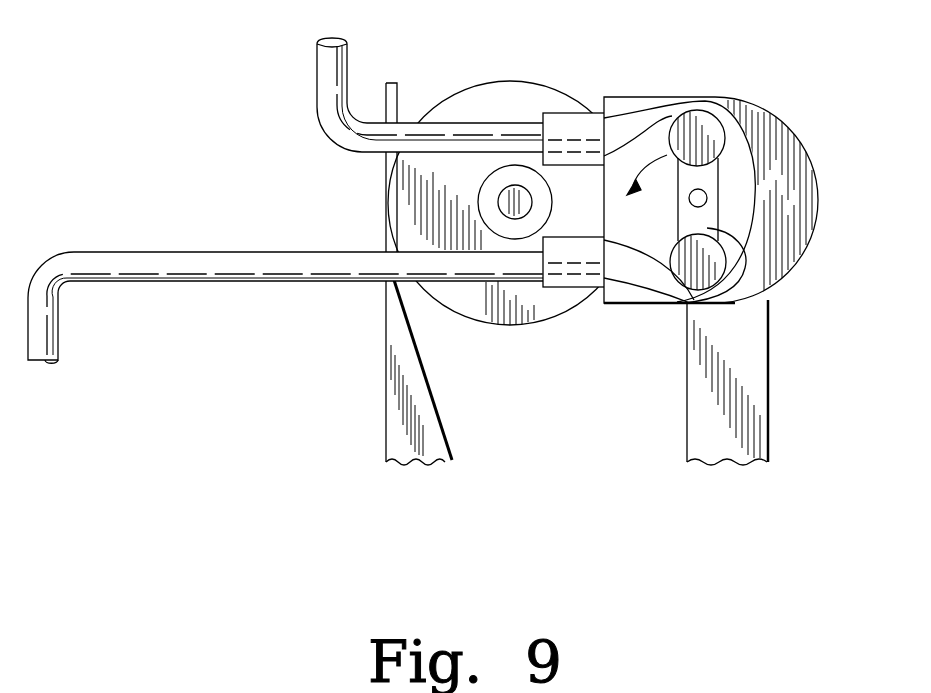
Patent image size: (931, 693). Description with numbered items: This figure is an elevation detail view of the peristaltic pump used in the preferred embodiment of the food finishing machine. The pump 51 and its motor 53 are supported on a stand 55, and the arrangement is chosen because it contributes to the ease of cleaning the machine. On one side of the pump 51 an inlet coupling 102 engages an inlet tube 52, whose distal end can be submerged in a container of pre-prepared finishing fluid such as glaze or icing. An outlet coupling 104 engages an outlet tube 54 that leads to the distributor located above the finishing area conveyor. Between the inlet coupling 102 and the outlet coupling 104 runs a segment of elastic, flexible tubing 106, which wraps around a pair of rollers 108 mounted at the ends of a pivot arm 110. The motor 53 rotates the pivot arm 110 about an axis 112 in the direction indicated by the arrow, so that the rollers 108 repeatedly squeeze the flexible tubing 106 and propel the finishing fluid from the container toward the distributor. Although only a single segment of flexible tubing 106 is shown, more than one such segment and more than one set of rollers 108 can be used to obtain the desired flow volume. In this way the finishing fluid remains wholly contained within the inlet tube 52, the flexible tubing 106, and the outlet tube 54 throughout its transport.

The pump 51 is at (729, 204).
The inlet tube 52 is at (116, 262).
The motor 53 is at (506, 91).
The outlet tube 54 is at (320, 76).
The stand 55 is at (437, 443).
The inlet coupling 102 is at (571, 290).
The outlet coupling 104 is at (571, 126).
The flexible tubing 106 is at (734, 132).
The rollers 108 is at (703, 120).
The pivot arm 110 is at (767, 288).
The axis 112 is at (690, 205).